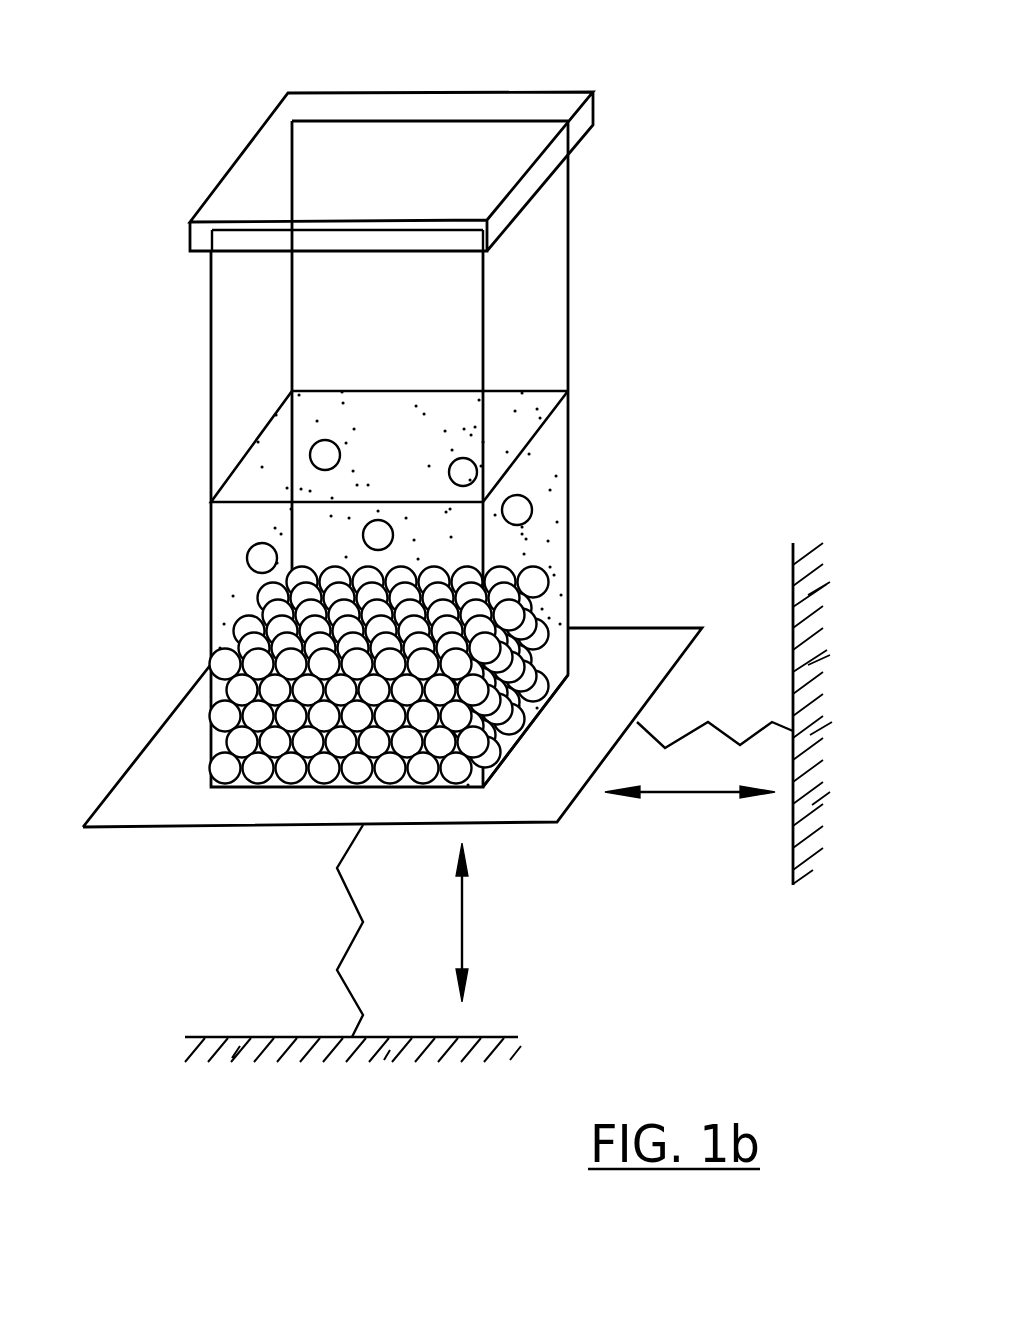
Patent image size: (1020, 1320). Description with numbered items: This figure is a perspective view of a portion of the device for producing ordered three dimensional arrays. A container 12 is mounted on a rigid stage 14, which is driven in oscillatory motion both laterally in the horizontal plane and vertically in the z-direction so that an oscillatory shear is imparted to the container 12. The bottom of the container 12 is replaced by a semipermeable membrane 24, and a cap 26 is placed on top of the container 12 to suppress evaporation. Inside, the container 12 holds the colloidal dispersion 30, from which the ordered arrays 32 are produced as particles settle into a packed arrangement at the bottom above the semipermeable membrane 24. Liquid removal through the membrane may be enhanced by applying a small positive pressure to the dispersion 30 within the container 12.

The cap 26 is at (517, 90).
The container 12 is at (568, 178).
The colloidal dispersion 30 is at (550, 458).
The ordered arrays 32 is at (223, 767).
The semipermeable membrane 24 is at (553, 701).
The rigid stage 14 is at (527, 805).